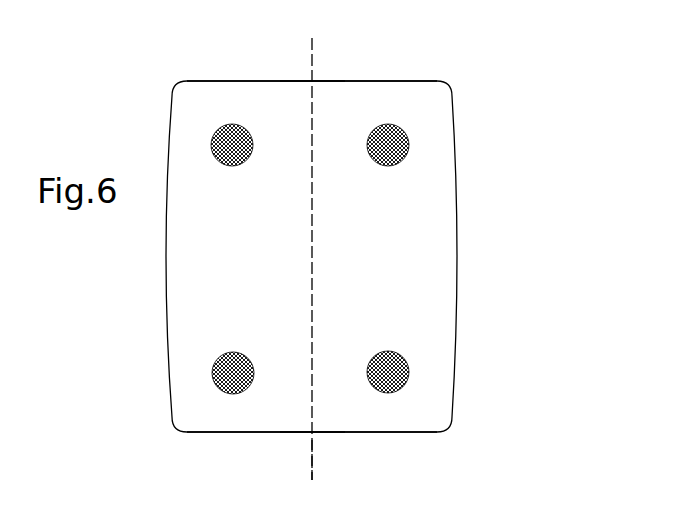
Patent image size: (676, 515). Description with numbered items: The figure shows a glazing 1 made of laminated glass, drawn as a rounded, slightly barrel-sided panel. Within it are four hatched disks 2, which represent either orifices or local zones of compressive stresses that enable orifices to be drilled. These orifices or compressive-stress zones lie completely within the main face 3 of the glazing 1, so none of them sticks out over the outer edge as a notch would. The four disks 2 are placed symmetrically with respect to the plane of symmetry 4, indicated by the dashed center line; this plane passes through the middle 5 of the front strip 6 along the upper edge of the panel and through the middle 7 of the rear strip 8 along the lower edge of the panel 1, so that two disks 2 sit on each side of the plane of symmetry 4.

The glazing 1 is at (492, 381).
The hatched disks 2 is at (222, 168).
The main face 3 is at (313, 100).
The plane of symmetry 4 is at (316, 468).
The middle of the front strip 5 is at (307, 78).
The front strip 6 is at (206, 79).
The middle of the rear strip 7 is at (309, 434).
The rear strip 8 is at (221, 434).